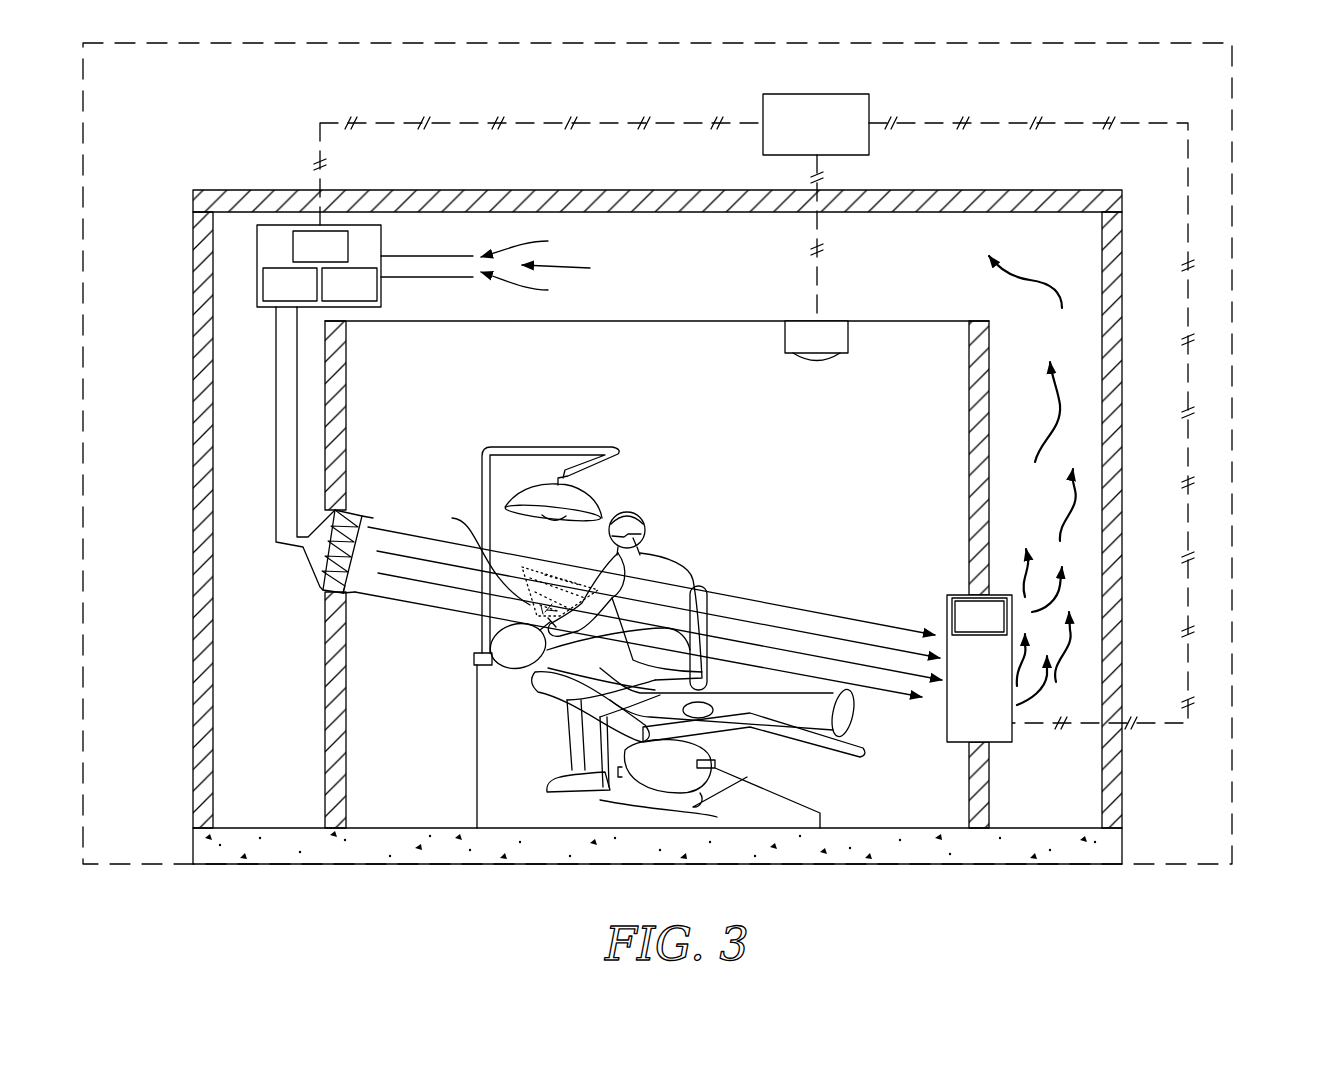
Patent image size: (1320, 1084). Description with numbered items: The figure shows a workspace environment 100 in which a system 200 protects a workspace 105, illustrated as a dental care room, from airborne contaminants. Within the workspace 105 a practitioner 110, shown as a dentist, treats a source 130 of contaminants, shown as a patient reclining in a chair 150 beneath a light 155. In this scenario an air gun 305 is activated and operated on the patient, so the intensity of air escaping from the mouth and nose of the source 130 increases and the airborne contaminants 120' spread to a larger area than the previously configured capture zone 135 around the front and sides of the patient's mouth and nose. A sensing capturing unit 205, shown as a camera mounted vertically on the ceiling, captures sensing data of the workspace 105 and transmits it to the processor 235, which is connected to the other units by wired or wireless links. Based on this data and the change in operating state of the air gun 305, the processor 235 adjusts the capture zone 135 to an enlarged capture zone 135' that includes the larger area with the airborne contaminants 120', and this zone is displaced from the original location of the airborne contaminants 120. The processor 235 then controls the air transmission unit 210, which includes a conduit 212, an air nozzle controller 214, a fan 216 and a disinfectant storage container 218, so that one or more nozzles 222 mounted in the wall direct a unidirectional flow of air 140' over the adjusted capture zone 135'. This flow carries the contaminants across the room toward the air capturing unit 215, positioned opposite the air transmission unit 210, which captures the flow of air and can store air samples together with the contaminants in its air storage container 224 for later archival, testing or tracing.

The workspace environment 100 is at (701, 453).
The workspace 105 is at (680, 293).
The practitioner 110 is at (647, 545).
The airborne contaminants 120 is at (471, 555).
The airborne contaminants 120' is at (546, 568).
The source 130 is at (488, 623).
The capture zone 135 is at (641, 590).
The capture zone 135' is at (574, 570).
The unidirectional flow of air 140' is at (648, 612).
The chair 150 is at (567, 693).
The light 155 is at (570, 503).
The system 200 is at (903, 103).
The sensing capturing unit 205 is at (785, 337).
The air transmission unit 210 is at (257, 247).
The conduit 212 is at (410, 256).
The air nozzle controller 214 is at (290, 284).
The air capturing unit 215 is at (947, 605).
The fan 216 is at (349, 284).
The disinfectant storage container 218 is at (320, 246).
The nozzle 222 is at (345, 512).
The air storage container 224 is at (979, 616).
The processor 235 is at (816, 124).
The air gun 305 is at (482, 668).